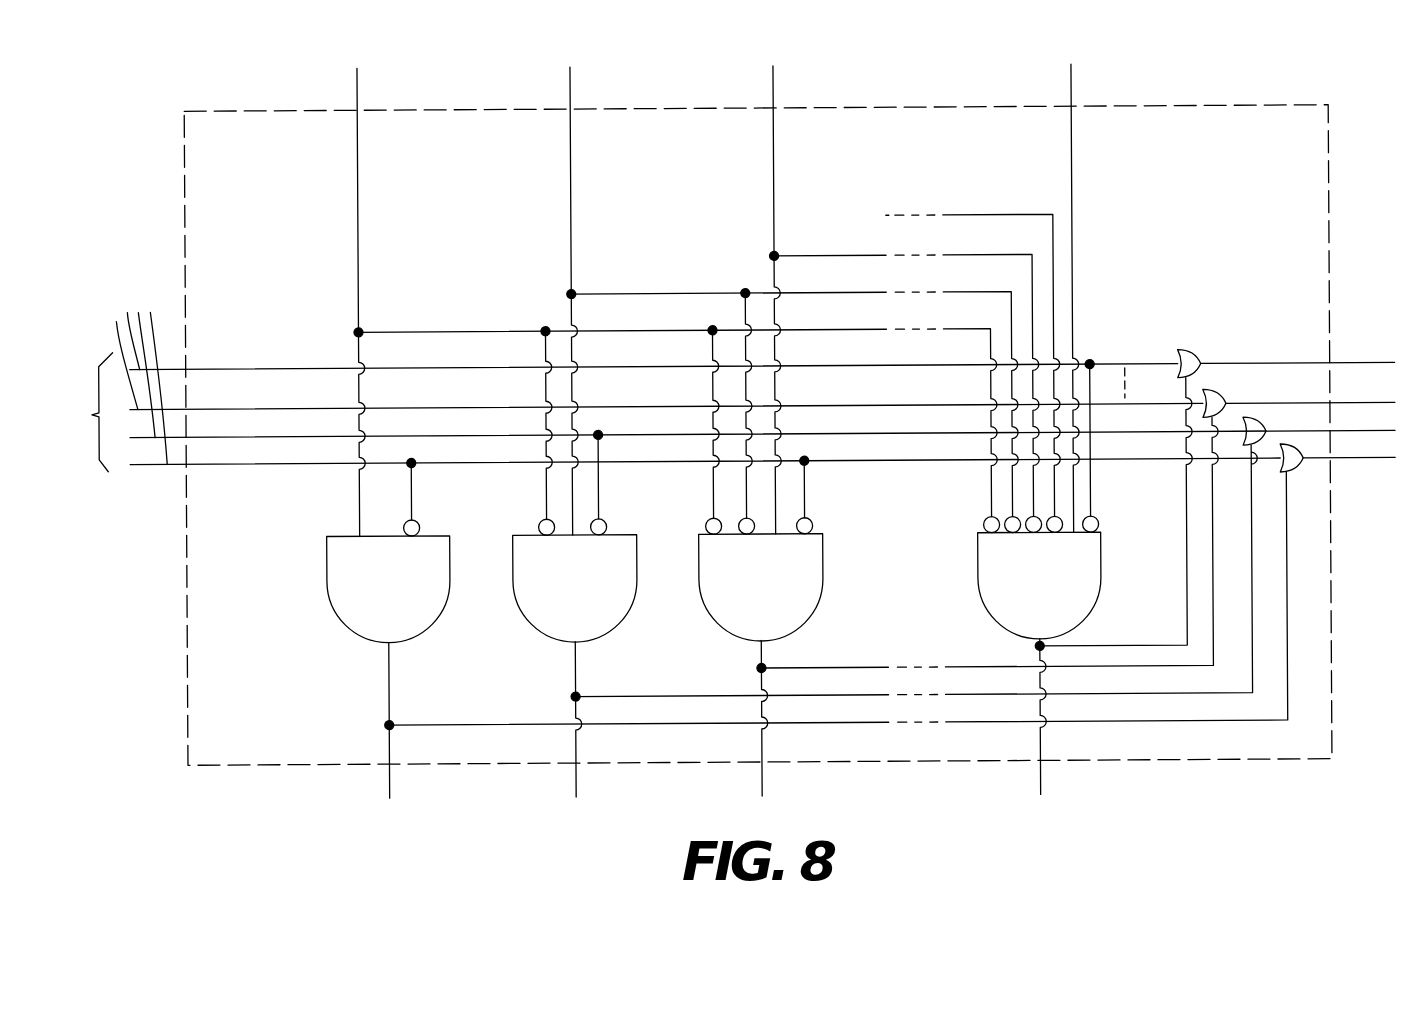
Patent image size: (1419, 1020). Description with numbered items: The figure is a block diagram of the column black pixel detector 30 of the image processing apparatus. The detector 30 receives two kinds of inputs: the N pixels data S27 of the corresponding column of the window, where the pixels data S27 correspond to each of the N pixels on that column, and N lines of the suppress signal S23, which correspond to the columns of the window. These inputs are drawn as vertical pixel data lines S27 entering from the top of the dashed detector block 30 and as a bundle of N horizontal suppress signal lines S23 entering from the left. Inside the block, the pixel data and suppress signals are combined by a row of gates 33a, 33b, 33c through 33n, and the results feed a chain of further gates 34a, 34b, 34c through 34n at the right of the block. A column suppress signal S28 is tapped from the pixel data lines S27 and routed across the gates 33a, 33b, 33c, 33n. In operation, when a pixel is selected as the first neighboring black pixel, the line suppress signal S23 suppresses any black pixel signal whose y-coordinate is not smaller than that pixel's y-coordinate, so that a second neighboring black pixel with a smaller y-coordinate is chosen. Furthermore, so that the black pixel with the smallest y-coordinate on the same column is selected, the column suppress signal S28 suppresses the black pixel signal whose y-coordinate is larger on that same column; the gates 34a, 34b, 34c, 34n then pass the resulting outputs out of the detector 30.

The column black pixel detector 30 is at (1182, 110).
The suppress signal S23 is at (755, 365).
The pixels data S27 is at (361, 87).
The column suppress signal S28 is at (806, 256).
The number of pixels N is at (88, 412).
The AND gate 33a is at (447, 597).
The AND gate 33b is at (635, 599).
The AND gate 33c is at (822, 595).
The AND gate 33n is at (978, 584).
The OR gate 34a is at (1298, 475).
The OR gate 34b is at (1250, 420).
The OR gate 34c is at (1212, 392).
The OR gate 34n is at (1178, 352).